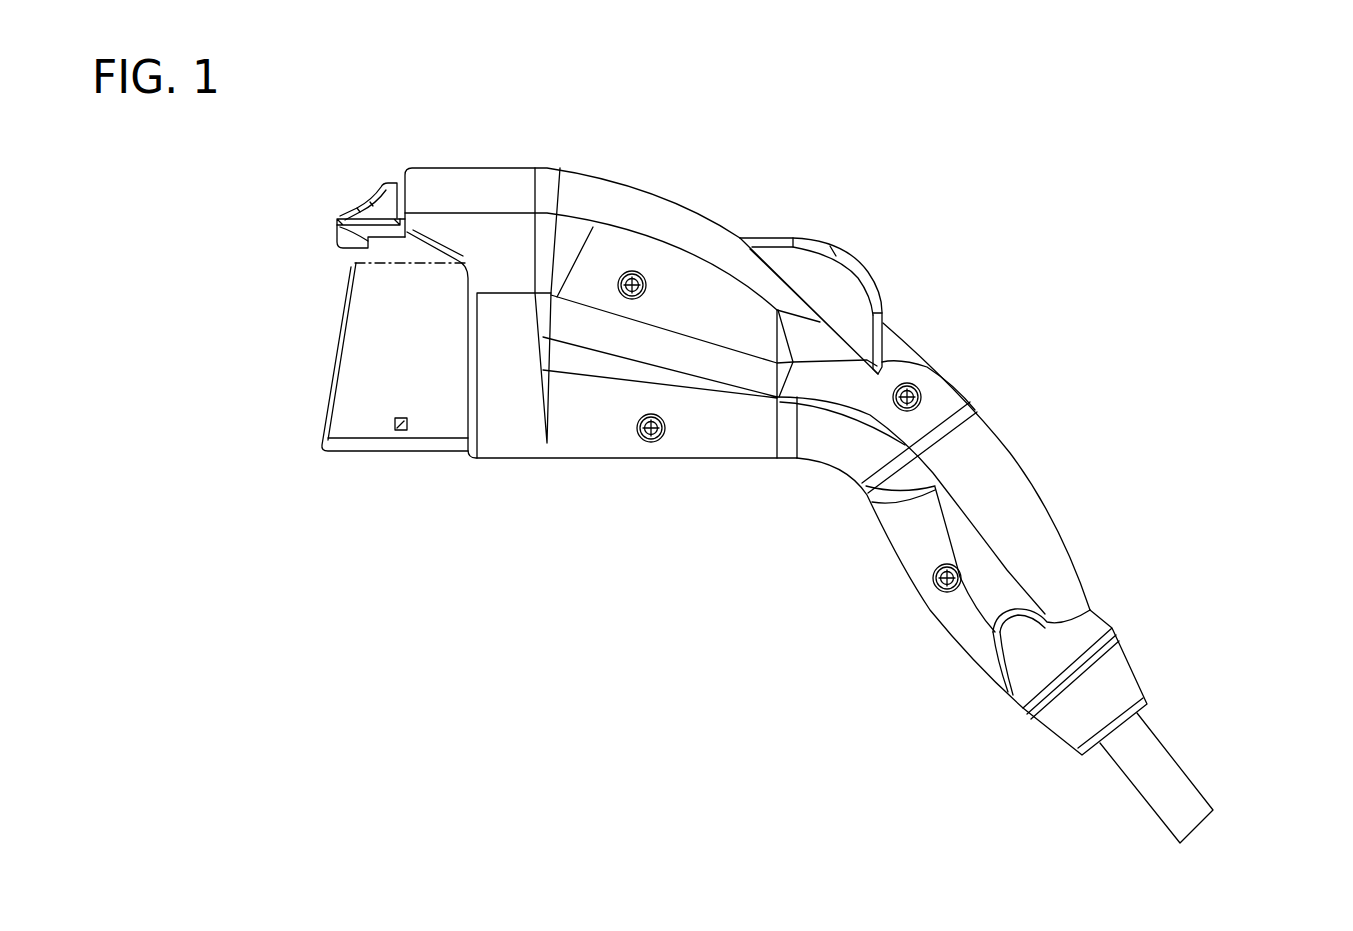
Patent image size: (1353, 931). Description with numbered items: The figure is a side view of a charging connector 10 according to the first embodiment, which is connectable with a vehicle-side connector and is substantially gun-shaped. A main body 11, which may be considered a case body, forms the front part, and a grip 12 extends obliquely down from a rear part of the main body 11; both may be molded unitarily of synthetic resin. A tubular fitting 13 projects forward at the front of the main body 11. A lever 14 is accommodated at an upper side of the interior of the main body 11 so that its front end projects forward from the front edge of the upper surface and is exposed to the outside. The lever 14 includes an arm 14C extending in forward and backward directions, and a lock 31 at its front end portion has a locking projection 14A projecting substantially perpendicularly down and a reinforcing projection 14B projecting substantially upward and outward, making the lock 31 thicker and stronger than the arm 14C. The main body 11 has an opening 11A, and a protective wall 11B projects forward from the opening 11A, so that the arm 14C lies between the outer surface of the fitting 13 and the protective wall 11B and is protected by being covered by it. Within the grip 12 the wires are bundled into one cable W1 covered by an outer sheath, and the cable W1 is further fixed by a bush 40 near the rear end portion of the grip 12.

The charging connector 10 is at (699, 140).
The main body 11 is at (736, 210).
The opening 11A is at (470, 353).
The protective wall 11B is at (425, 178).
The grip 12 is at (1063, 453).
The tubular fitting 13 is at (360, 420).
The lever 14 is at (338, 184).
The locking projection 14A is at (350, 240).
The reinforcing projection 14B is at (393, 183).
The arm 14C is at (403, 222).
The lock 31 is at (337, 220).
The bush 40 is at (1120, 688).
The cable W1 is at (1167, 780).